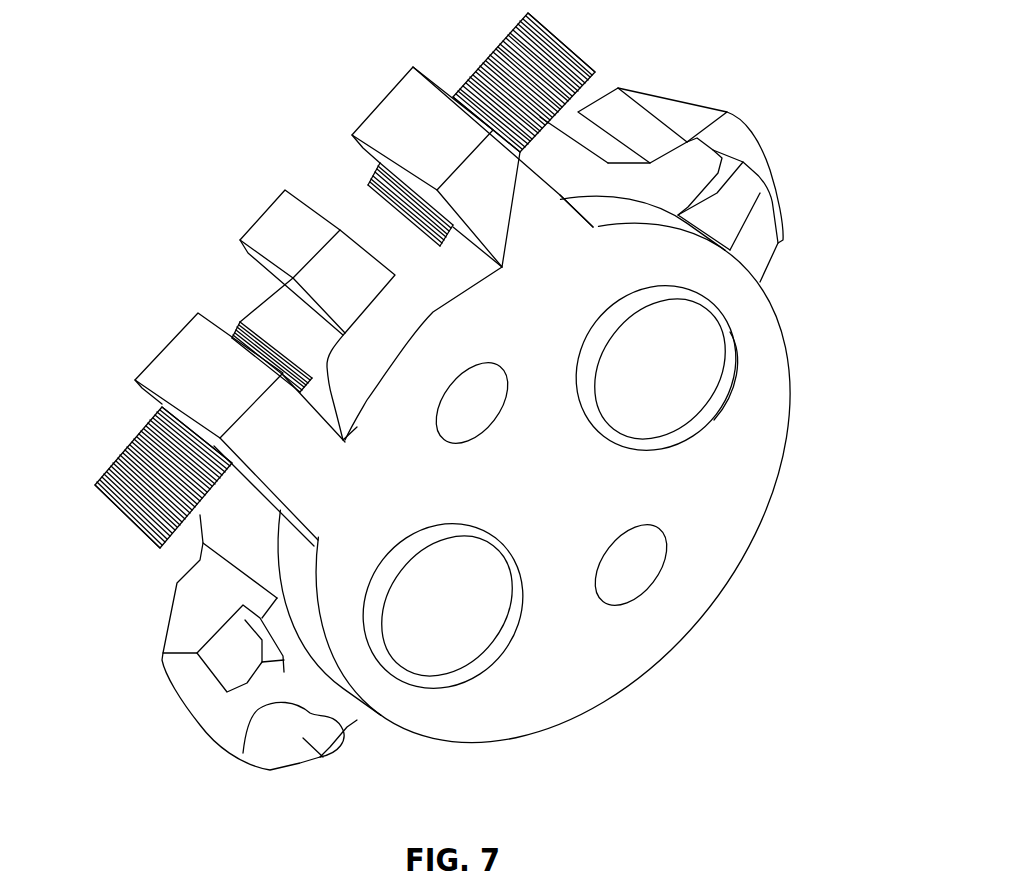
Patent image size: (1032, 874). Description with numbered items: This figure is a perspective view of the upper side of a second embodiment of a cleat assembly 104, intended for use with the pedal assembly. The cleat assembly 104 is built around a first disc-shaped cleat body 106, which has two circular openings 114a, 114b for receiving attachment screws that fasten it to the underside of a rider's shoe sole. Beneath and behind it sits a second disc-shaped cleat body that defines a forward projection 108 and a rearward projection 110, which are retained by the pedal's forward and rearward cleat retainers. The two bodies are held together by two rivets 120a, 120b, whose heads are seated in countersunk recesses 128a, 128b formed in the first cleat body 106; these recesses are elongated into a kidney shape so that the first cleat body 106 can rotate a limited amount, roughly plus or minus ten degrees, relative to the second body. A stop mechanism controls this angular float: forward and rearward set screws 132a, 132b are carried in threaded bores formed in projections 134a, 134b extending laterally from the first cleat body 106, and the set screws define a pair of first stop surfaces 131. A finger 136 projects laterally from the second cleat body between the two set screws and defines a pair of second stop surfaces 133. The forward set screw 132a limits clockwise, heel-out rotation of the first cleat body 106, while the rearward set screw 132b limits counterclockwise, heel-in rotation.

The cleat assembly 104 is at (820, 294).
The first disc-shaped cleat body 106 is at (670, 617).
The forward projection 108 is at (686, 110).
The rearward projection 110 is at (224, 727).
The circular opening 114a is at (640, 565).
The circular opening 114b is at (478, 402).
The rivet 120a is at (700, 357).
The rivet 120b is at (483, 587).
The countersunk recess 128a is at (687, 428).
The countersunk recess 128b is at (487, 653).
The first stop surfaces 131 is at (385, 215).
The forward set screw 132a is at (546, 36).
The rearward set screw 132b is at (110, 478).
The second stop surfaces 133 is at (354, 229).
The projection 134a is at (385, 105).
The projection 134b is at (177, 351).
The finger 136 is at (272, 222).